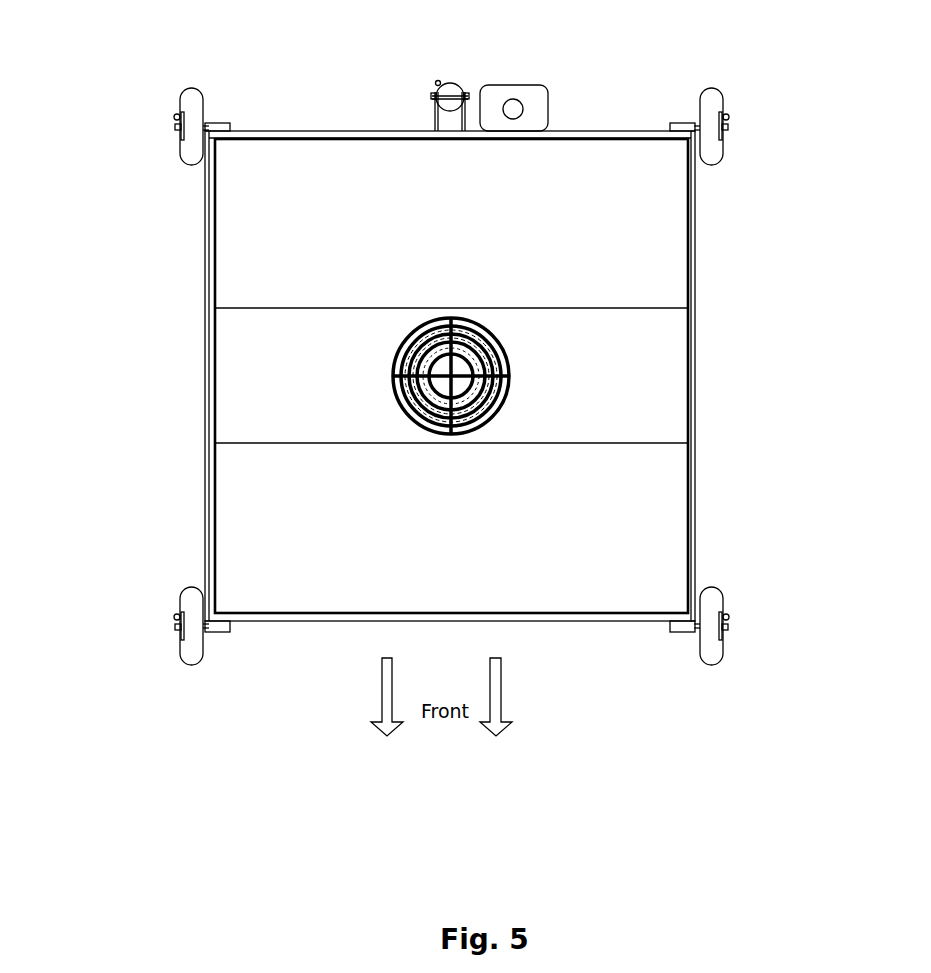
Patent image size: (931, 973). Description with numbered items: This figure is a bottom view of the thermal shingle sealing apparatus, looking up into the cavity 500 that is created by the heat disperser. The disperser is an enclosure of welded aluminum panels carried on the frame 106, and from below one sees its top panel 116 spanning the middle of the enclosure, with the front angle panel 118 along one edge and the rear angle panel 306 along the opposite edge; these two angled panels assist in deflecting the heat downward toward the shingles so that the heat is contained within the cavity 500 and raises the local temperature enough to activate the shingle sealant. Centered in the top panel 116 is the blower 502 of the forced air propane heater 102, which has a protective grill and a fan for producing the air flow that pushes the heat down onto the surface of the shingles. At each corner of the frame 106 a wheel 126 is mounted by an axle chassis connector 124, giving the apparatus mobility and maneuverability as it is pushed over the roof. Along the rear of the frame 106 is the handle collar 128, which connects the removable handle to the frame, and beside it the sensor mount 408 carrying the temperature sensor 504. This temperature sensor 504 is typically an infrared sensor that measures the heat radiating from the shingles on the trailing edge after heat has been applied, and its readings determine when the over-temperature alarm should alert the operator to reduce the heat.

The forced air propane heater 102 is at (398, 335).
The frame 106 is at (216, 462).
The top panel 116 is at (585, 383).
The front angle panel 118 is at (465, 520).
The axle chassis connector 124 is at (683, 632).
The wheel 126 is at (192, 625).
The handle collar 128 is at (458, 85).
The rear angle panel 306 is at (458, 222).
The sensor mount 408 is at (540, 113).
The cavity 500 is at (315, 383).
The blower 502 is at (452, 377).
The temperature sensor 504 is at (513, 109).